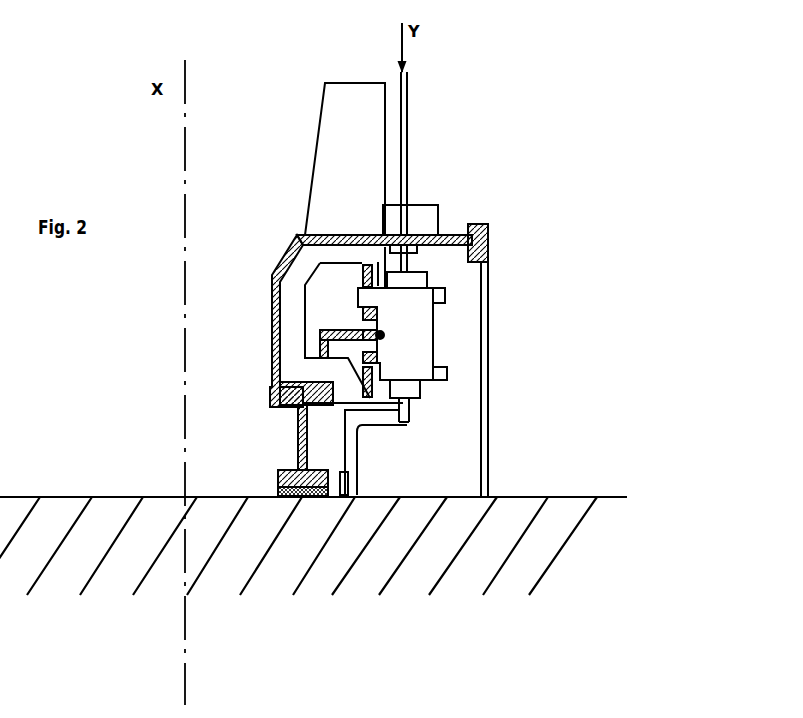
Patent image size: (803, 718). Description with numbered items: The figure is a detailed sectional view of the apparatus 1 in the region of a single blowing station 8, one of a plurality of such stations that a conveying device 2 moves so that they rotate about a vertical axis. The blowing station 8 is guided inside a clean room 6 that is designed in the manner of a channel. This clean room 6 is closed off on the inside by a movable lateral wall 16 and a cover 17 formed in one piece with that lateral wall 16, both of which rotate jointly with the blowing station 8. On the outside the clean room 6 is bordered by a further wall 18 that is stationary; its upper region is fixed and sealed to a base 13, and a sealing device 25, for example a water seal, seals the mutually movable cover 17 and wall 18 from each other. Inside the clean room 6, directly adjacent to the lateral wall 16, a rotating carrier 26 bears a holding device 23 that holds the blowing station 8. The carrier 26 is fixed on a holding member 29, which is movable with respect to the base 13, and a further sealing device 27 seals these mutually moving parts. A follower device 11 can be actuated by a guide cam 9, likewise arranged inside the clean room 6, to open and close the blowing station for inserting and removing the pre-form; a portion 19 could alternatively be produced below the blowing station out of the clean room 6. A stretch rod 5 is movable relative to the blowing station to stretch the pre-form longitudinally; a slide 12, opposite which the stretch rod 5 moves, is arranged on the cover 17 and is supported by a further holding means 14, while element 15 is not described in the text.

The apparatus 1 is at (356, 149).
The conveying device 2 is at (285, 248).
The stretch rod 5 is at (403, 162).
The clean room 6 is at (453, 428).
The blowing station 8 is at (422, 316).
The guide cam 9 is at (353, 477).
The follower device 11 is at (365, 428).
The slide 12 is at (420, 213).
The base 13 is at (525, 543).
The holding means 14 is at (282, 142).
The drive shaft 15 is at (410, 246).
The lateral wall 16 is at (272, 321).
The cover 17 is at (348, 238).
The wall 18 is at (481, 290).
The portion 19 is at (406, 407).
The holding device 23 is at (340, 330).
The sealing device 25 is at (483, 228).
The carrier 26 is at (297, 368).
The sealing device 27 is at (277, 487).
The holding member 29 is at (297, 447).